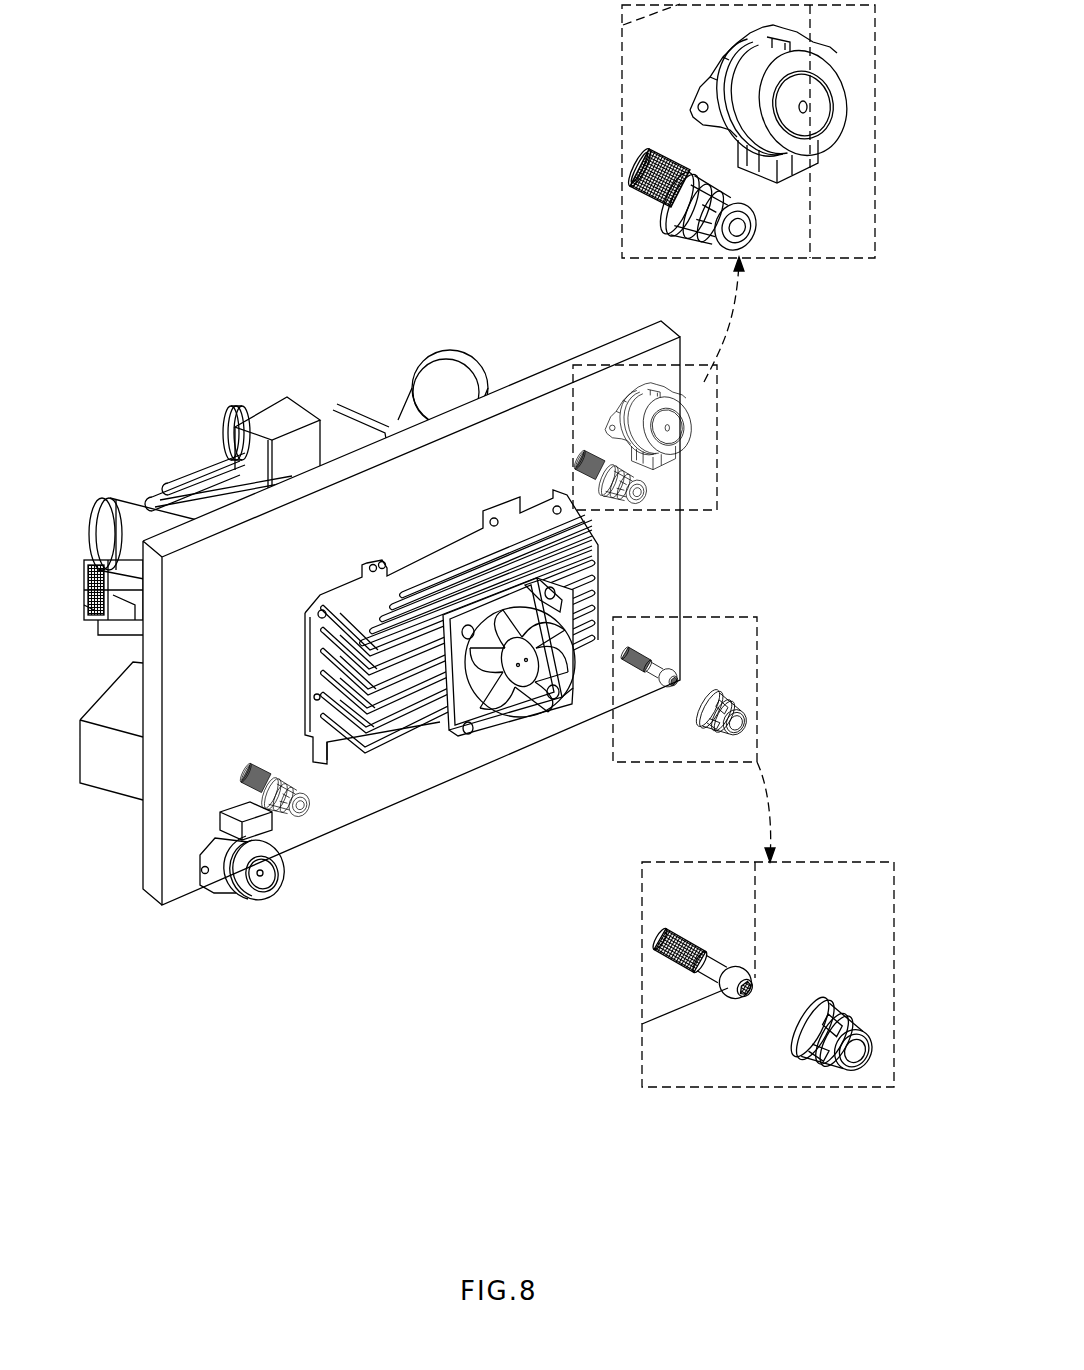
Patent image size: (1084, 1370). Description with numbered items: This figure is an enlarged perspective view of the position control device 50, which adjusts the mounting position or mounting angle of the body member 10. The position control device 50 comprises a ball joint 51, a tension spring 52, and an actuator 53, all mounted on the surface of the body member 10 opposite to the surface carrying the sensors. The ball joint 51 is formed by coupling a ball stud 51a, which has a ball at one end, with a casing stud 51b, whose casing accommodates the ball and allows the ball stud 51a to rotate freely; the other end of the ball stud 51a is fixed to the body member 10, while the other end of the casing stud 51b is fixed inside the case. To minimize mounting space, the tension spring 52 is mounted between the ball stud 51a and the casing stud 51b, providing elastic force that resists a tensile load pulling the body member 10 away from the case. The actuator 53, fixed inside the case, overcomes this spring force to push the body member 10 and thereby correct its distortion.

The body member 10 is at (540, 407).
The position control device 50 is at (706, 383).
The ball joint 51 is at (697, 224).
The ball stud 51a is at (730, 993).
The casing stud 51b is at (808, 1060).
The tension spring 52 is at (633, 190).
The actuator 53 is at (838, 92).